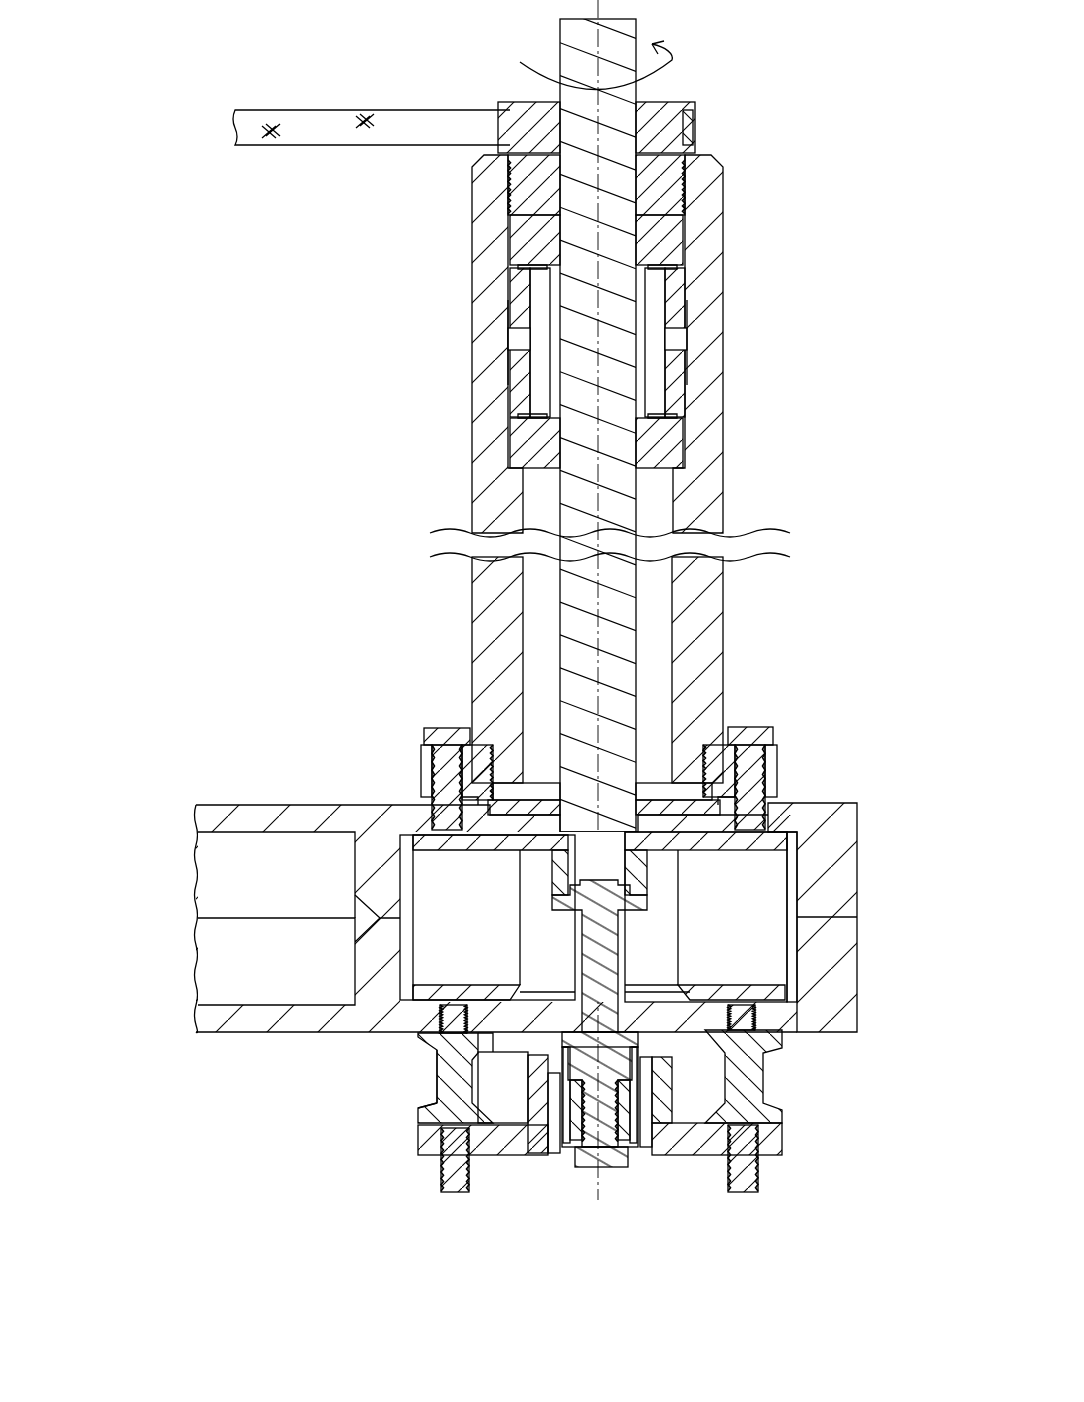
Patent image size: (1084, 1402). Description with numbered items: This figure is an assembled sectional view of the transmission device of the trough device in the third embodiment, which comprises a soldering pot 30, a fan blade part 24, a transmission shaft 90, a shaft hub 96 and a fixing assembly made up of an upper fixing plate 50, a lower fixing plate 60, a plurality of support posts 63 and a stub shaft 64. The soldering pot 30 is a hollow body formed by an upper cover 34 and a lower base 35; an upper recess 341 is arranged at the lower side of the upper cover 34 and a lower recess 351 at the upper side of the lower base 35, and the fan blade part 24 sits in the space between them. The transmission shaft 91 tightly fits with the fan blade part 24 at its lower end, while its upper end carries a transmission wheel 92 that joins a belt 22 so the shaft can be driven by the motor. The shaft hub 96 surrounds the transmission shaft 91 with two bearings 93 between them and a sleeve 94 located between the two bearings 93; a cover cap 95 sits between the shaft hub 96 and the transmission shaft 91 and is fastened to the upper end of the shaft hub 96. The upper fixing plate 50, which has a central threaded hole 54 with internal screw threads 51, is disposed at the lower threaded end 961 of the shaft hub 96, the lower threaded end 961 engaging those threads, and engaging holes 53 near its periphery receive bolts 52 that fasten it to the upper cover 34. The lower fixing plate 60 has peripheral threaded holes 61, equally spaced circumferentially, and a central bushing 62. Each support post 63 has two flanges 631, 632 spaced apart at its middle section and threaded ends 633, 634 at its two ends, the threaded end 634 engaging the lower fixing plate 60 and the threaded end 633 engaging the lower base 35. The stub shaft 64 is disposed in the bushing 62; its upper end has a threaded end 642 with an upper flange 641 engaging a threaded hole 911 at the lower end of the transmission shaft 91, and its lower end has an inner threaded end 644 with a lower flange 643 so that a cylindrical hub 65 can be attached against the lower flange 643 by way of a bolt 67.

The belt 22 is at (358, 122).
The fan blade part 24 is at (782, 967).
The soldering pot 30 is at (140, 845).
The upper cover 34 is at (195, 808).
The lower base 35 is at (195, 1021).
The upper recess 341 is at (537, 795).
The lower recess 351 is at (785, 1090).
The upper fixing plate 50 is at (422, 750).
The internal screw threads 51 is at (775, 778).
The bolts 52 is at (430, 726).
The engaging holes 53 is at (765, 748).
The central threaded hole 54 is at (655, 788).
The lower fixing plate 60 is at (782, 1140).
The threaded holes 61 is at (502, 1143).
The central bushing 62 is at (528, 1095).
The support posts 63 is at (430, 1105).
The flange 631 is at (438, 1075).
The flange 632 is at (420, 1135).
The threaded end 633 is at (430, 1030).
The threaded end 634 is at (440, 1180).
The stub shaft 64 is at (622, 952).
The upper flange 641 is at (627, 898).
The threaded end 642 is at (627, 868).
The lower flange 643 is at (782, 1098).
The inner threaded end 644 is at (545, 1153).
The cylindrical hub 65 is at (642, 1143).
The bolt 67 is at (603, 1167).
The transmission shaft 90 is at (765, 318).
The transmission shaft 91 is at (563, 615).
The threaded hole 911 is at (830, 838).
The transmission wheel 92 is at (520, 100).
The bearing 93 is at (518, 242).
The sleeve 94 is at (518, 293).
The cover cap 95 is at (517, 185).
The shaft hub 96 is at (478, 505).
The lower threaded end 961 is at (688, 790).